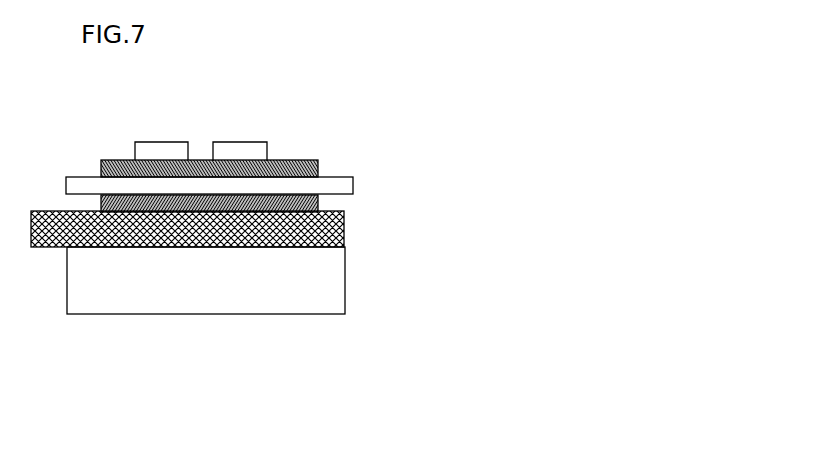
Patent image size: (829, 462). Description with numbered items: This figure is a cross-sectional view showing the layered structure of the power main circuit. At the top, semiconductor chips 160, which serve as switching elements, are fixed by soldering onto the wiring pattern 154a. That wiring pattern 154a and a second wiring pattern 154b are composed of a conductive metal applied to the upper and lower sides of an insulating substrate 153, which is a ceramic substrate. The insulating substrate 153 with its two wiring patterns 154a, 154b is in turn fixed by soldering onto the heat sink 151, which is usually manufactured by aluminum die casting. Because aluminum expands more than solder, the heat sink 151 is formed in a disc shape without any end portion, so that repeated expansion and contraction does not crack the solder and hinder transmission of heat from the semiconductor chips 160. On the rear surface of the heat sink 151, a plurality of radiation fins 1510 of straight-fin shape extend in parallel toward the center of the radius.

The semiconductor chip 160 is at (162, 151).
The wiring pattern 154a is at (318, 167).
The insulating substrate 153 is at (315, 182).
The wiring pattern 154b is at (318, 203).
The heat sink 151 is at (327, 228).
The radiation fin 1510 is at (310, 297).